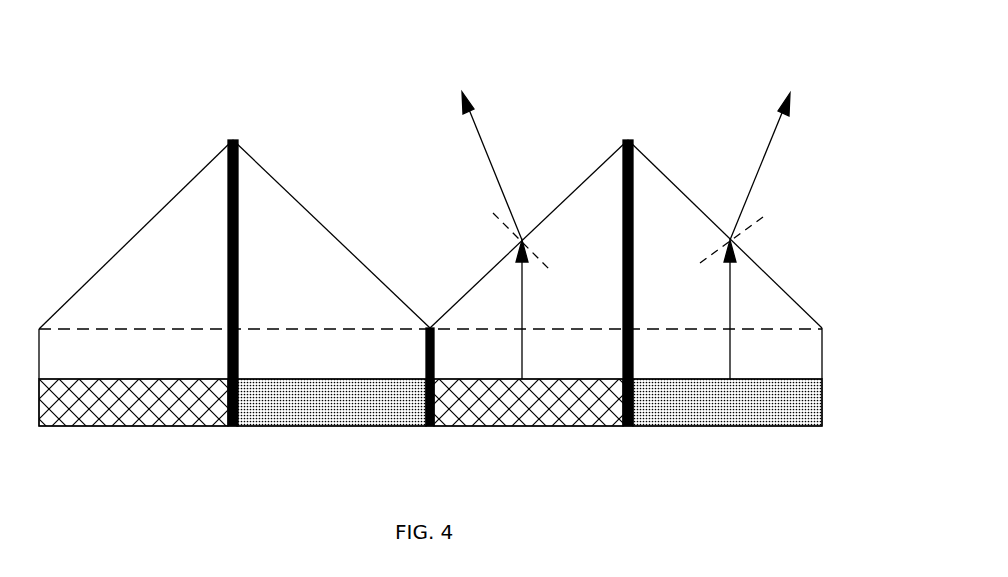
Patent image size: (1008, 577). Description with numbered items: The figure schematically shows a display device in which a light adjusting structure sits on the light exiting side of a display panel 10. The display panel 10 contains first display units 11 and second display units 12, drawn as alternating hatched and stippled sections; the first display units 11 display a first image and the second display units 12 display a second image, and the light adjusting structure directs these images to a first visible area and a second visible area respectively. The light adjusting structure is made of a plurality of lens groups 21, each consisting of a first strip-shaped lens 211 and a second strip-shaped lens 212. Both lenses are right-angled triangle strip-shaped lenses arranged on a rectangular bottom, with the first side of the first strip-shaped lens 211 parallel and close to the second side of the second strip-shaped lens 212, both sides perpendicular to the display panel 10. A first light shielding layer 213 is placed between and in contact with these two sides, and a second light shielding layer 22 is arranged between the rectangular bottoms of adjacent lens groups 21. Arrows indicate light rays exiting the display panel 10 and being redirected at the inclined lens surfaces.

The display panel 10 is at (823, 403).
The first display units 11 is at (117, 405).
The second display units 12 is at (297, 405).
The lens group 21 is at (333, 195).
The first strip-shaped lens 211 is at (152, 238).
The second strip-shaped lens 212 is at (331, 215).
The first light shielding layer 213 is at (623, 240).
The second light shielding layer 22 is at (430, 328).